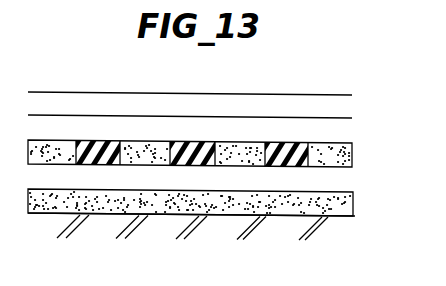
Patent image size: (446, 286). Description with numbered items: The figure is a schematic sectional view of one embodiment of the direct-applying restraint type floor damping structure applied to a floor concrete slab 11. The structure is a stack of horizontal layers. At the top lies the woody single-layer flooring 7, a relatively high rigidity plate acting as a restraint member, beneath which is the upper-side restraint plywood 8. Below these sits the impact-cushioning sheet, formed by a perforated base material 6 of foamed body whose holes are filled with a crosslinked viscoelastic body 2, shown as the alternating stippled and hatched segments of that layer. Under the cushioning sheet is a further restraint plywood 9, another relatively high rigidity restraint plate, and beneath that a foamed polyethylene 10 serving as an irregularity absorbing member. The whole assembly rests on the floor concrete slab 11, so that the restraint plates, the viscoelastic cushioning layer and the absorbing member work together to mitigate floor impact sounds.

The woody single-layer flooring 7 is at (342, 108).
The upper-side restraint plywood 8 is at (341, 132).
The perforated base material 6 is at (352, 153).
The crosslinked viscoelastic body 2 is at (300, 163).
The restraint plywood 9 is at (338, 183).
The foamed polyethylene 10 is at (342, 202).
The floor concrete slab 11 is at (325, 228).